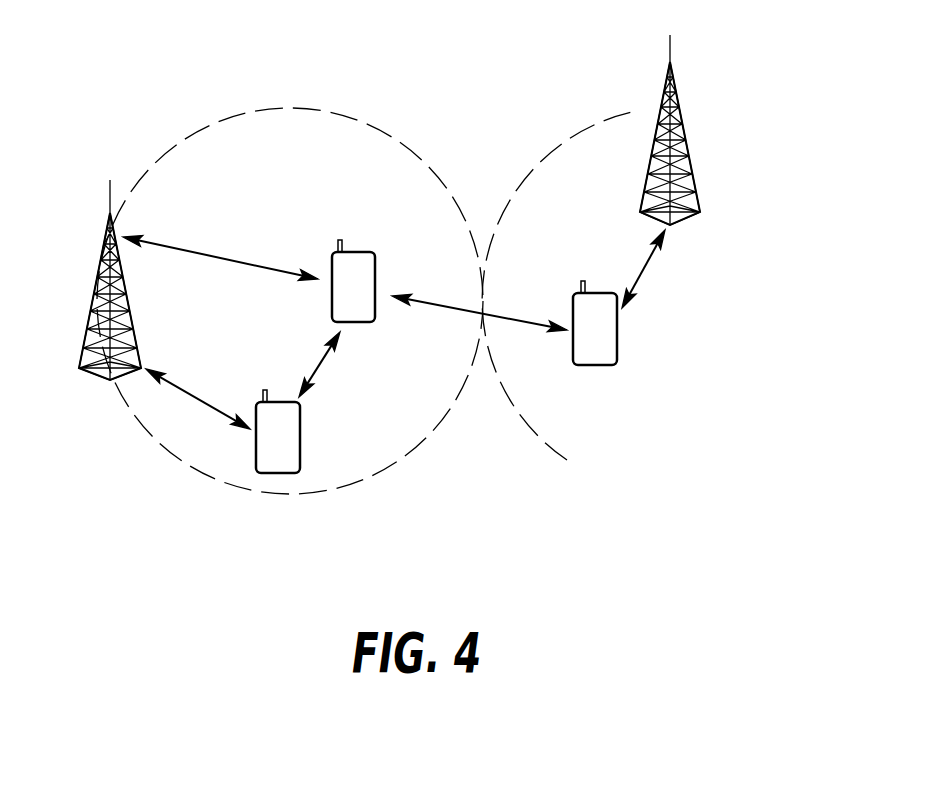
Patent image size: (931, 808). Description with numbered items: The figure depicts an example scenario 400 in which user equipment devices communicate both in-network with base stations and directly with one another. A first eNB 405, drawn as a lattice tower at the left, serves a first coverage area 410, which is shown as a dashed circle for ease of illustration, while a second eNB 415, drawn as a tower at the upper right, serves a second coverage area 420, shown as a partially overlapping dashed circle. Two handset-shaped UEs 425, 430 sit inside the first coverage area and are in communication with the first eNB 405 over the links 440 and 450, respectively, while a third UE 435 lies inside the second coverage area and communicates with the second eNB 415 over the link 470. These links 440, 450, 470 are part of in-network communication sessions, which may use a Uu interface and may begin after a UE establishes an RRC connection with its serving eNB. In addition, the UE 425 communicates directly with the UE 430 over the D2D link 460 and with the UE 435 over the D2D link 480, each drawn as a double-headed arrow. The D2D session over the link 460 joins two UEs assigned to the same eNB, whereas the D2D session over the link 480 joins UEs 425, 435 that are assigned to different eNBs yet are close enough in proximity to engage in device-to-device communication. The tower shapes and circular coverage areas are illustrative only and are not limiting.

The example scenario 400 is at (718, 592).
The first eNB 405 is at (95, 292).
The first coverage area 410 is at (338, 122).
The second eNB 415 is at (683, 118).
The second coverage area 420 is at (568, 150).
The UE 425 is at (362, 252).
The UE 430 is at (300, 440).
The UE 435 is at (603, 365).
The link 440 is at (222, 255).
The link 450 is at (190, 388).
The D2D link 460 is at (320, 362).
The link 470 is at (642, 273).
The D2D link 480 is at (500, 313).